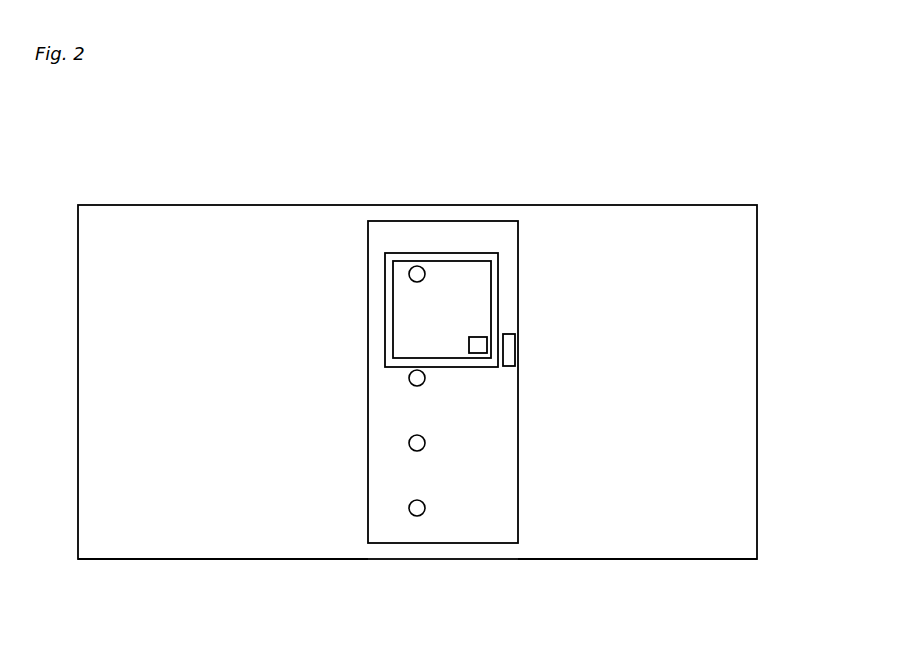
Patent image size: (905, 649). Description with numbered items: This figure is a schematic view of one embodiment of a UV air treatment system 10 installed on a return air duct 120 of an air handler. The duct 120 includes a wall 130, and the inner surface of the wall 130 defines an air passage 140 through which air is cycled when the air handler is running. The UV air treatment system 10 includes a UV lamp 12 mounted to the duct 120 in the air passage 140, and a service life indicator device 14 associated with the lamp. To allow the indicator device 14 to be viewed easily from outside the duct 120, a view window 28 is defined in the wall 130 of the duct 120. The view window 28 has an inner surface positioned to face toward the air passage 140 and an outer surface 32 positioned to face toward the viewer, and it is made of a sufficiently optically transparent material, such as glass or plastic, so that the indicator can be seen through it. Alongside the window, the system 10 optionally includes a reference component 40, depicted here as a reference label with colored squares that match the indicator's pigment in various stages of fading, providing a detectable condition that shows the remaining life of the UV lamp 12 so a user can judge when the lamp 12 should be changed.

The UV air treatment system 10 is at (378, 139).
The UV lamp 12 is at (420, 387).
The service life indicator device 14 is at (467, 342).
The view window 28 is at (460, 253).
The outer surface 32 is at (477, 277).
The reference component 40 is at (517, 348).
The return air duct 120 is at (230, 183).
The wall 130 is at (233, 542).
The air passage 140 is at (652, 540).